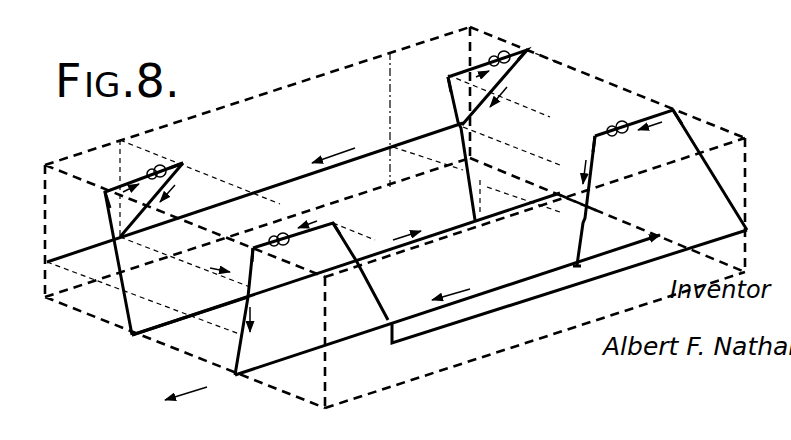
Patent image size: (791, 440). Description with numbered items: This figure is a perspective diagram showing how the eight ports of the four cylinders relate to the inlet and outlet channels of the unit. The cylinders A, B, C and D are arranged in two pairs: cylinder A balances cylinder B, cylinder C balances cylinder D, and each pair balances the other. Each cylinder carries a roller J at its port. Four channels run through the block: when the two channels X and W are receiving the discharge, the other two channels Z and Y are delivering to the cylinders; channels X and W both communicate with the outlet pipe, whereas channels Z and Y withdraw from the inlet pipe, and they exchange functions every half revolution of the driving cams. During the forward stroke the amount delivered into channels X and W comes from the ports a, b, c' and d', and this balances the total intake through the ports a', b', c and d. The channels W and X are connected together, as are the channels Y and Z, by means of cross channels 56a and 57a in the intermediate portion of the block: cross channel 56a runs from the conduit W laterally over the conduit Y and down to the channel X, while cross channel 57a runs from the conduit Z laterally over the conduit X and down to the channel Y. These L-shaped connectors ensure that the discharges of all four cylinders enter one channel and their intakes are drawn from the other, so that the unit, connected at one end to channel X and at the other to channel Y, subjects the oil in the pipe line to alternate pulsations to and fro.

The cylinder A is at (311, 298).
The cylinder B is at (487, 135).
The cylinder C is at (660, 187).
The cylinder D is at (144, 246).
The roller J is at (606, 104).
The port a is at (243, 259).
The port a' is at (342, 220).
The port b is at (530, 48).
The port b' is at (439, 86).
The port c is at (680, 112).
The port c' is at (583, 150).
The port d is at (94, 202).
The port d' is at (185, 157).
The channel W is at (255, 192).
The channel X is at (412, 321).
The channel Y is at (336, 273).
The channel Z is at (542, 308).
The cross channel 56a is at (190, 301).
The cross channel 57a is at (581, 206).